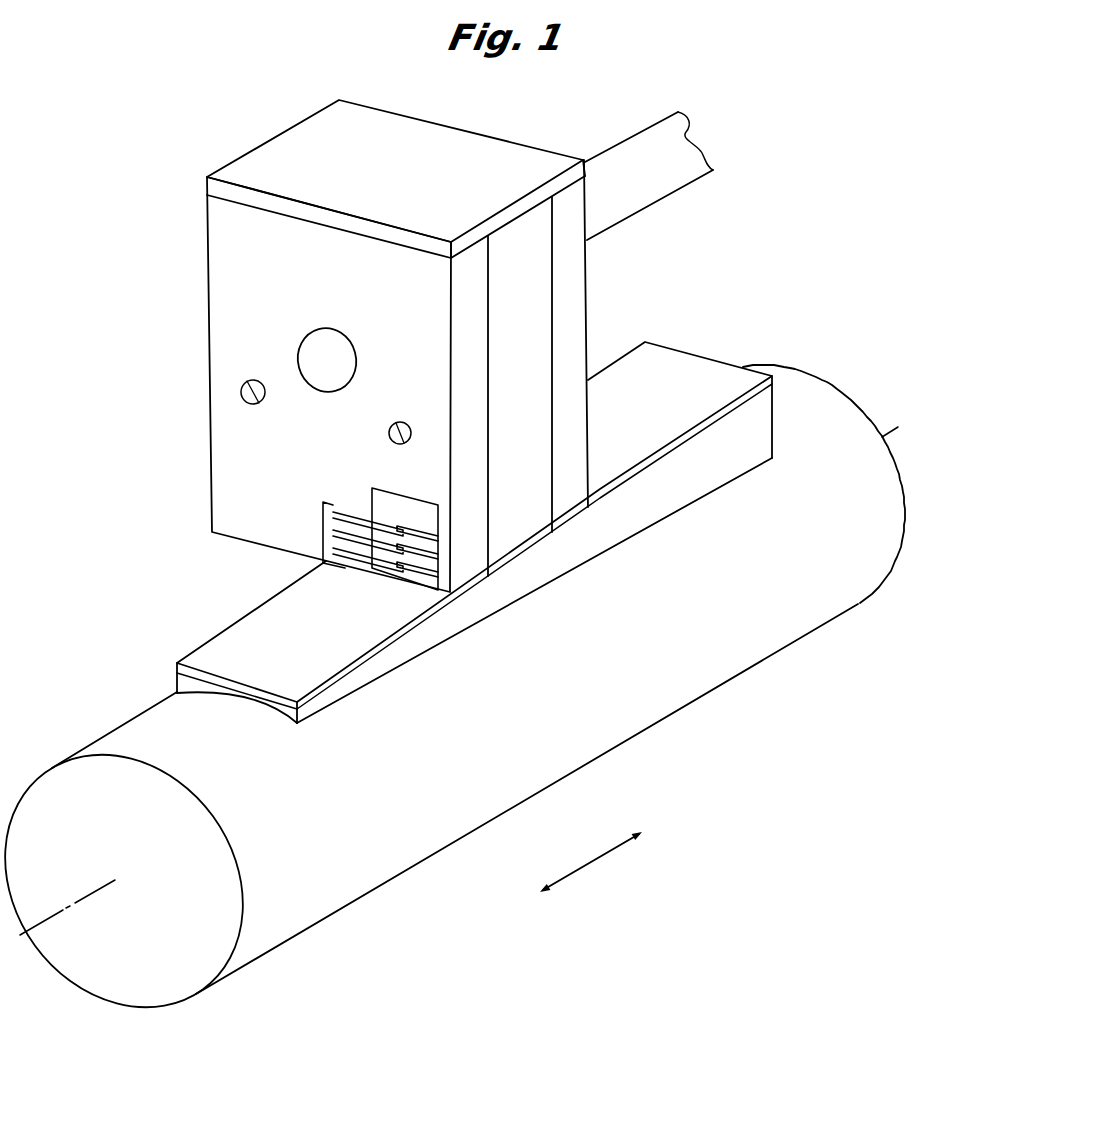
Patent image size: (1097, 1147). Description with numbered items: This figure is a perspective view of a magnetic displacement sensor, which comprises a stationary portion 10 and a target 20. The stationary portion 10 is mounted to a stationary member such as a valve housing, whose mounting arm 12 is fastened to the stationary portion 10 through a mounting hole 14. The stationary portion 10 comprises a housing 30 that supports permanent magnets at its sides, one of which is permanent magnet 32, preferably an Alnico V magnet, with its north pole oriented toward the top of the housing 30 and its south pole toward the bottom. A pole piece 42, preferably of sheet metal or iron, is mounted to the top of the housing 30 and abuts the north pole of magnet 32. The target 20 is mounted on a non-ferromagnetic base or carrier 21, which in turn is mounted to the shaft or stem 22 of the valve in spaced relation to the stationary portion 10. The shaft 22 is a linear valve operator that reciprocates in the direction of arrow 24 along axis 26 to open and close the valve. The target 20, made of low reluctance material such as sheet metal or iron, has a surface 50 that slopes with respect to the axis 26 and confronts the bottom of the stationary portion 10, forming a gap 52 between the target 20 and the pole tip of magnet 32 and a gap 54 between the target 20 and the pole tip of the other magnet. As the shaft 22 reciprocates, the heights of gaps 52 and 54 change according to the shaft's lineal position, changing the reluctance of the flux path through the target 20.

The stationary portion 10 is at (205, 254).
The mounting arm 12 is at (688, 182).
The mounting hole 14 is at (312, 333).
The target 20 is at (200, 634).
The non-ferromagnetic base or carrier 21 is at (602, 530).
The shaft or stem 22 is at (757, 670).
The arrow 24 is at (592, 862).
The axis 26 is at (92, 892).
The housing 30 is at (587, 312).
The permanent magnet 32 is at (552, 268).
The pole piece 42 is at (448, 150).
The surface 50 is at (692, 375).
The gap 52 is at (500, 569).
The gap 54 is at (300, 568).